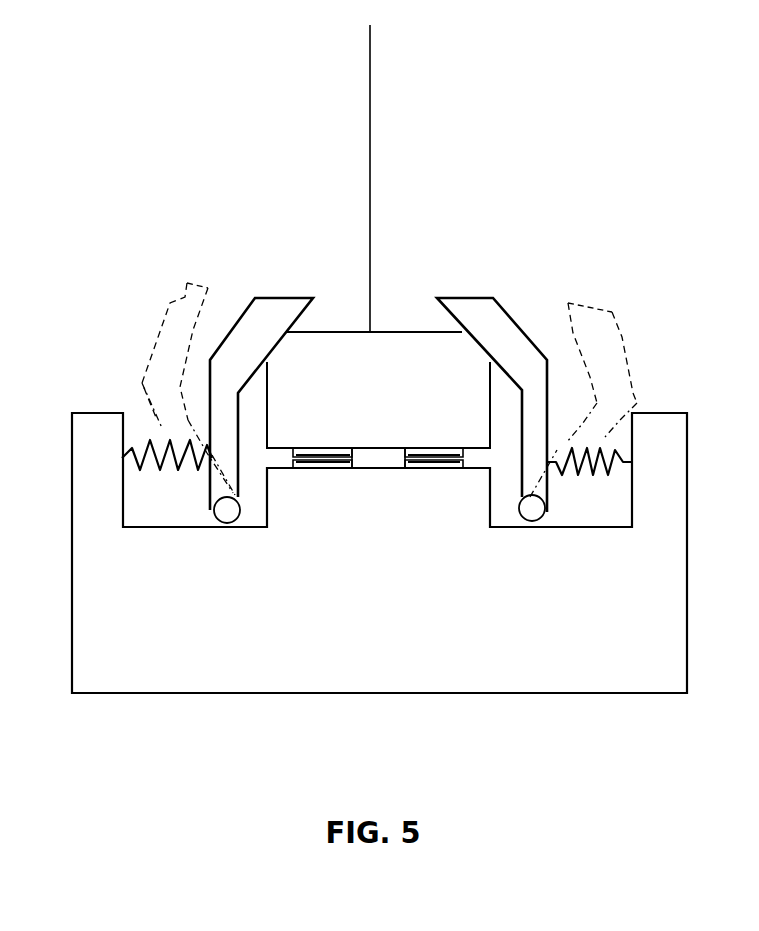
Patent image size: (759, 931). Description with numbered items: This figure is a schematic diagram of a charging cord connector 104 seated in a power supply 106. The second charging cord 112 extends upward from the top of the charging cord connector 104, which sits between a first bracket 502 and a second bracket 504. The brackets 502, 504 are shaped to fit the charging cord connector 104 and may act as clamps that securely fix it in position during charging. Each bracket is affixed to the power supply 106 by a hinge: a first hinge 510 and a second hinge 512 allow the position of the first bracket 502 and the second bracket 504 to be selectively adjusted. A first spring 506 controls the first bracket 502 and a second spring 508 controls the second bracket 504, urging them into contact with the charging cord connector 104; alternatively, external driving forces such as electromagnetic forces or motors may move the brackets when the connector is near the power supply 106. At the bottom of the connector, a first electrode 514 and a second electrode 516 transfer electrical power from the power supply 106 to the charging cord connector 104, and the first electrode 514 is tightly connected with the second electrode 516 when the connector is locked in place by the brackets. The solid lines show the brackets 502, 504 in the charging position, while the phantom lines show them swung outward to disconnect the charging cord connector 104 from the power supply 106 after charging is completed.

The charging cord connector 104 is at (390, 332).
The power supply 106 is at (655, 413).
The second charging cord 112 is at (370, 122).
The first bracket 502 is at (568, 303).
The second bracket 504 is at (187, 283).
The first spring 506 is at (603, 452).
The second spring 508 is at (158, 465).
The first hinge 510 is at (240, 527).
The second hinge 512 is at (518, 513).
The first electrode 514 is at (405, 448).
The second electrode 516 is at (403, 468).